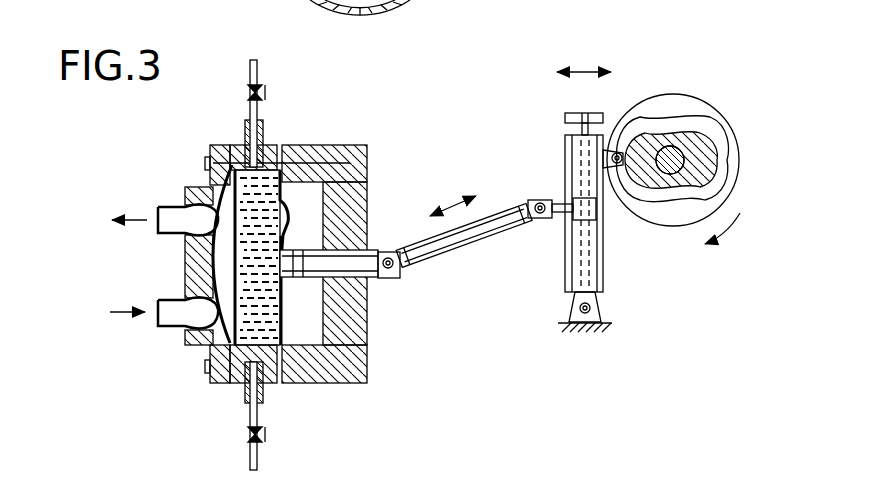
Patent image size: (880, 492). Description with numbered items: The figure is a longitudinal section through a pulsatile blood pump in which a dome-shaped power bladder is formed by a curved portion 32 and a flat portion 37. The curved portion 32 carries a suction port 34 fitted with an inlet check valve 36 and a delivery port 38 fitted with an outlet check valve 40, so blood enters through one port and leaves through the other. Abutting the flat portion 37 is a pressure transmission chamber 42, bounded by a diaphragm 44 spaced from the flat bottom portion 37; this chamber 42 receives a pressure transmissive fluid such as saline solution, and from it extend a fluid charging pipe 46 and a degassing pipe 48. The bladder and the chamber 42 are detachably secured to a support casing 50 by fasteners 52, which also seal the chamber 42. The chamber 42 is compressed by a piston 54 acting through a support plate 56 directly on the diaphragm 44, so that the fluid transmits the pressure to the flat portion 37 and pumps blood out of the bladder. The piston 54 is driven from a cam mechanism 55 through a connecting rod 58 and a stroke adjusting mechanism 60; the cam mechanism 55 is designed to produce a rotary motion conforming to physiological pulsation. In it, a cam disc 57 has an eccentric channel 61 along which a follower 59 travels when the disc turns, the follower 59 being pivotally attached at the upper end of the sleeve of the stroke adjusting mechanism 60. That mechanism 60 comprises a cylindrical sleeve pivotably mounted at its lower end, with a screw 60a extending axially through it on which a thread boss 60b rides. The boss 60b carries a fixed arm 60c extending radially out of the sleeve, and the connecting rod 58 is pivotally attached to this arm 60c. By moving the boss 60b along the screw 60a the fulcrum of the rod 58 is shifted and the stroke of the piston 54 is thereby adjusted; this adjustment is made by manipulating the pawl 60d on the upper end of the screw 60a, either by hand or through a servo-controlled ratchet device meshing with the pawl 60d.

The curved portion 32 is at (188, 262).
The suction port 34 is at (168, 323).
The inlet check valve 36 is at (206, 330).
The flat portion 37 is at (284, 303).
The delivery port 38 is at (186, 213).
The outlet check valve 40 is at (194, 220).
The pressure transmission chamber 42 is at (258, 213).
The diaphragm 44 is at (291, 178).
The fluid charging pipe 46 is at (258, 413).
The degassing pipe 48 is at (252, 64).
The support casing 50 is at (346, 348).
The fasteners 52 is at (322, 145).
The piston 54 is at (356, 264).
The cam mechanism 55 is at (674, 232).
The support plate 56 is at (288, 232).
The cam disc 57 is at (666, 112).
The connecting rod 58 is at (459, 234).
The follower 59 is at (650, 105).
The stroke adjusting mechanism 60 is at (614, 243).
The screw 60a is at (587, 262).
The thread boss 60b is at (574, 220).
The fixed arm 60c is at (550, 200).
The pawl 60d is at (583, 115).
The eccentric channel 61 is at (720, 152).